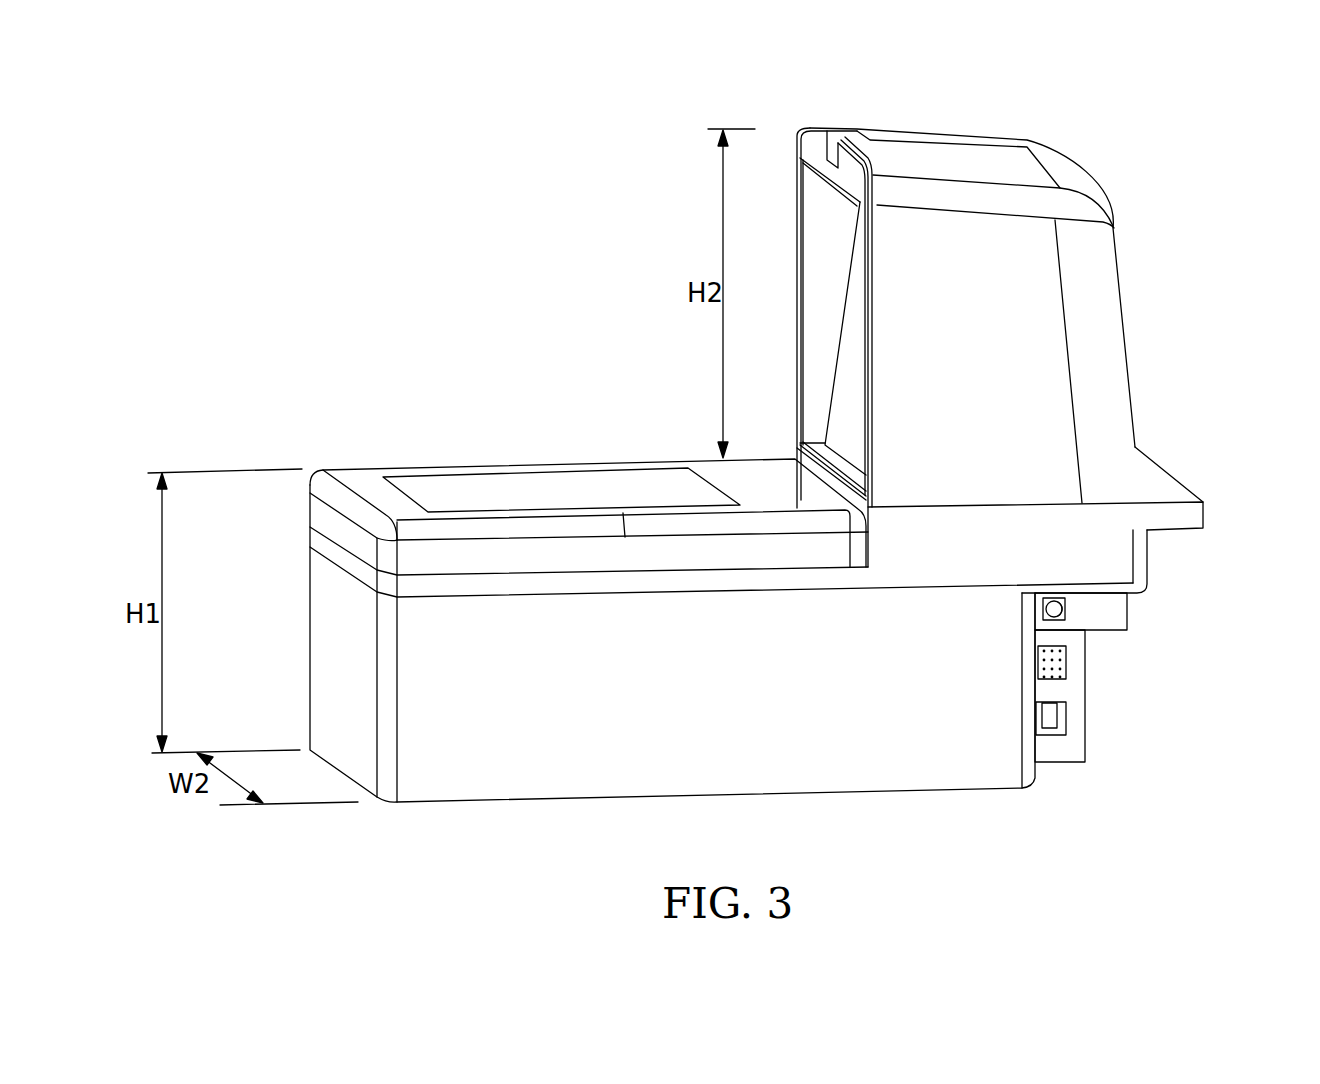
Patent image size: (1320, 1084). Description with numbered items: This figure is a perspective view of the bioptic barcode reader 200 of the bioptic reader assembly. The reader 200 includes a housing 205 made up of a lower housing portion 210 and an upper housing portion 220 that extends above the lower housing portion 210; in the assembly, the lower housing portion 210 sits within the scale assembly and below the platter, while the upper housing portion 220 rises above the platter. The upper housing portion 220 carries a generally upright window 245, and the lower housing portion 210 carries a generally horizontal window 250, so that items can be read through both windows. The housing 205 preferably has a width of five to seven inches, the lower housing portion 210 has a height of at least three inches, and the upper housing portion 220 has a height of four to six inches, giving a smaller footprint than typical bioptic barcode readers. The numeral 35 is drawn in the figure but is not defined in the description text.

The bioptic barcode reader 200 is at (1188, 122).
The upper housing portion 220 is at (1122, 307).
The generally upright window 245 is at (848, 338).
The counter top / platter 35 is at (683, 458).
The generally horizontal window 250 is at (607, 501).
The lower housing portion 210 is at (753, 793).
The housing 205 is at (1156, 579).